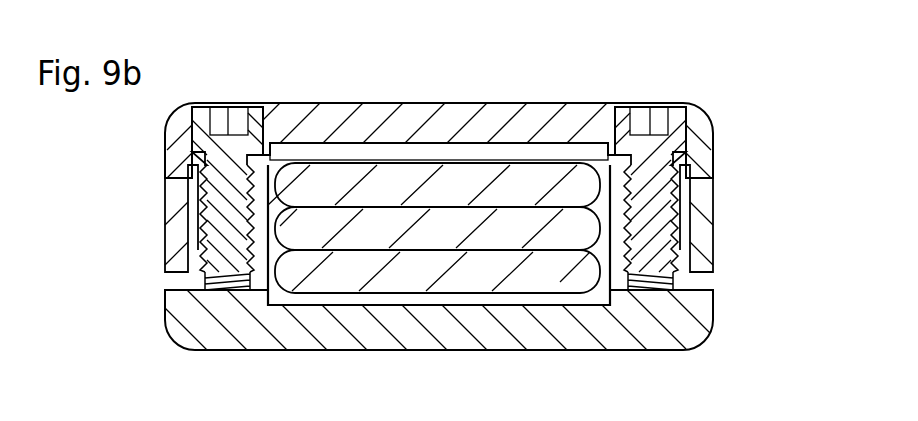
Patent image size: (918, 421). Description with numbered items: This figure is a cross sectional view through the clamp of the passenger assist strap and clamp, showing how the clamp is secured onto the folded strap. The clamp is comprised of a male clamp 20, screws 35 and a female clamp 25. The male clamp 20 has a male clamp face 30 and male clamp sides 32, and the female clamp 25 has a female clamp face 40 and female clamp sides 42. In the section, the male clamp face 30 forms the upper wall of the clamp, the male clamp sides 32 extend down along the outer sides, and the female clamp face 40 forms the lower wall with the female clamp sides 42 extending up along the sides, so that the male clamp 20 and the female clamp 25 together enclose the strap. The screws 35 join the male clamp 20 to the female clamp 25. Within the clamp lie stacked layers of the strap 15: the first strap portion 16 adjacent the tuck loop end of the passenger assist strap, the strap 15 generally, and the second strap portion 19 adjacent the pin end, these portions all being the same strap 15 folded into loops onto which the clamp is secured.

The male clamp 20 is at (272, 93).
The male clamp face 30 is at (498, 118).
The male clamp sides 32 is at (705, 187).
The screws 35 is at (677, 133).
The female clamp sides 42 is at (198, 237).
The female clamp face 40 is at (218, 333).
The female clamp 25 is at (658, 355).
The first strap portion 16 is at (388, 185).
The strap 15 is at (527, 232).
The second strap portion 19 is at (467, 280).